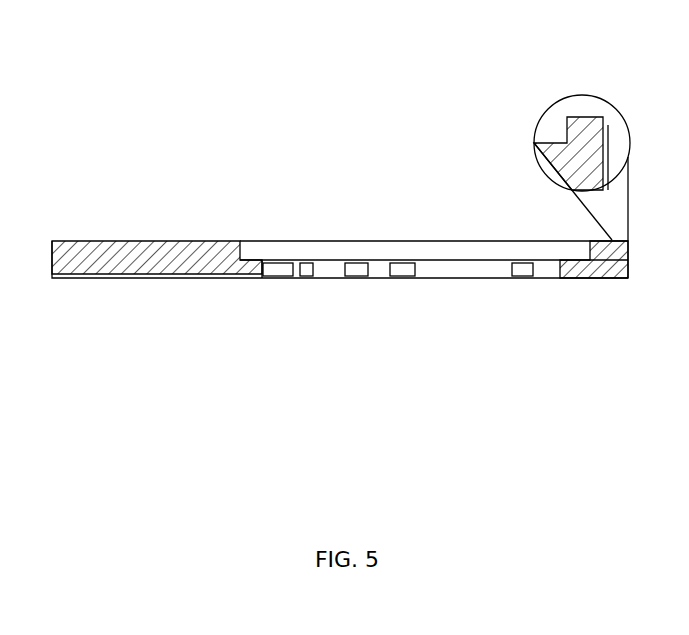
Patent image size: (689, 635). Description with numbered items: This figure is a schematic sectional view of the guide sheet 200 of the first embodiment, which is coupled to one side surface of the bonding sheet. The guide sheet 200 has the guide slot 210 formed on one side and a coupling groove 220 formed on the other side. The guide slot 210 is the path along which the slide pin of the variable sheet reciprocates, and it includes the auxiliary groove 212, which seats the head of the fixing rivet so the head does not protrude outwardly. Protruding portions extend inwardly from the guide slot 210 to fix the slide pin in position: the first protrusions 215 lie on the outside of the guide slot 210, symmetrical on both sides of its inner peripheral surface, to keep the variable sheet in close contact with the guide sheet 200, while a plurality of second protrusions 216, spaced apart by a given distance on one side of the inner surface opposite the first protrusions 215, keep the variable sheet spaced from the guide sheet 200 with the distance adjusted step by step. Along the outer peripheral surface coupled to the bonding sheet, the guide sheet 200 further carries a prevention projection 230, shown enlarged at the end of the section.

The guide sheet 200 is at (206, 241).
The auxiliary groove 212 is at (322, 243).
The coupling groove 220 is at (127, 278).
The guide slot 210 is at (433, 278).
The second protrusions 216 is at (305, 278).
The first protrusions 215 is at (523, 278).
The prevention projection 230 is at (588, 120).